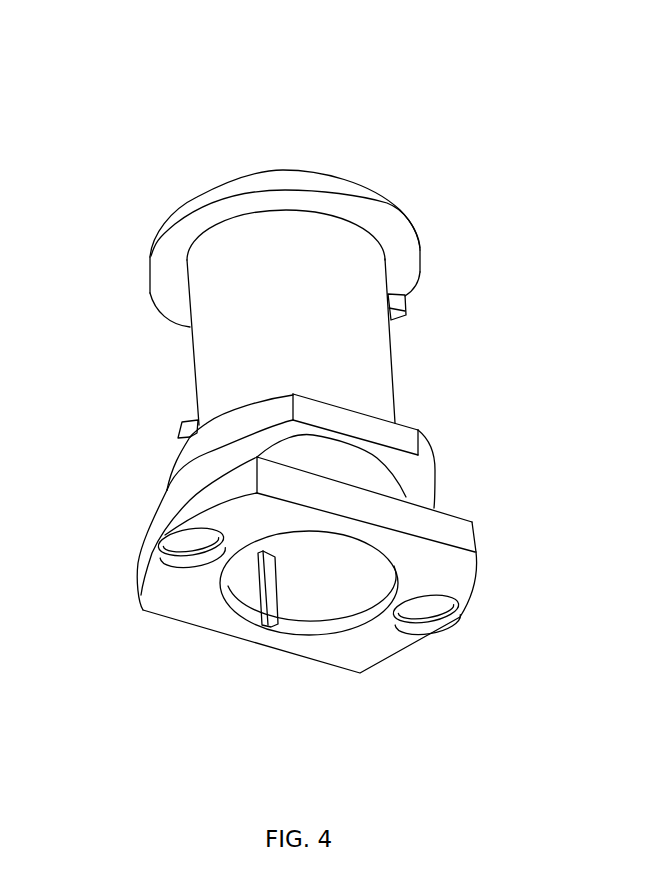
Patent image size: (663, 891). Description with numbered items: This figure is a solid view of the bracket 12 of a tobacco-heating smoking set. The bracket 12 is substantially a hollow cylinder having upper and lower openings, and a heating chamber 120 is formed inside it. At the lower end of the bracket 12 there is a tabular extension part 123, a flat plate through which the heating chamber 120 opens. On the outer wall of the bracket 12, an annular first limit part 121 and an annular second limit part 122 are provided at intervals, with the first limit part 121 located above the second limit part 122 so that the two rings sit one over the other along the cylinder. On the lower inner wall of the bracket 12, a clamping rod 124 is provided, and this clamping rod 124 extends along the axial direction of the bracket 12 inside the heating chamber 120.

The bracket 12 is at (75, 46).
The heating chamber 120 is at (317, 577).
The first limit part 121 is at (389, 204).
The second limit part 122 is at (433, 450).
The extension part 123 is at (463, 538).
The clamping rod 124 is at (267, 600).